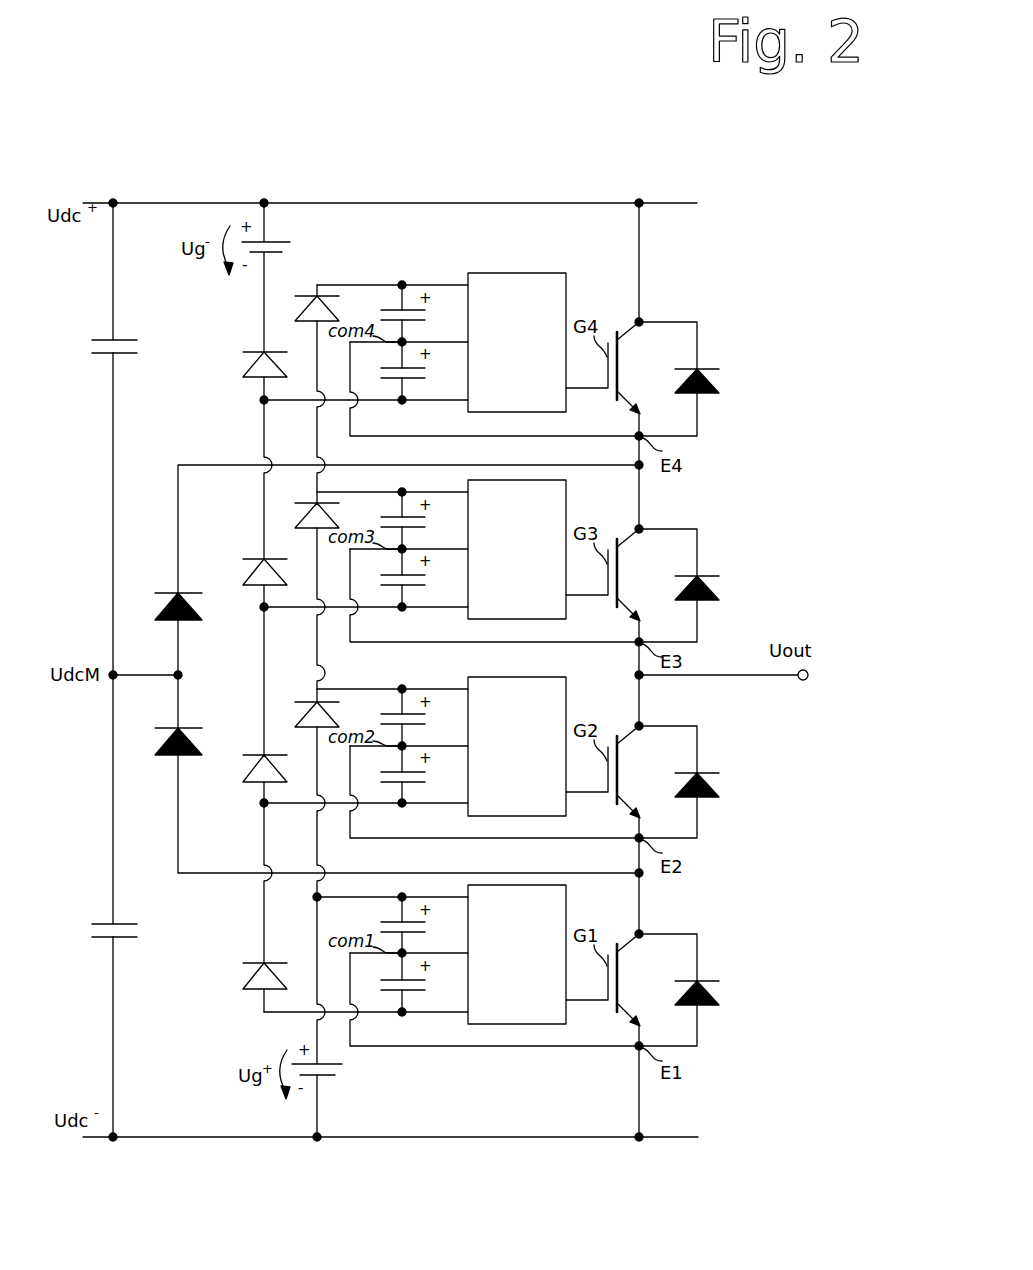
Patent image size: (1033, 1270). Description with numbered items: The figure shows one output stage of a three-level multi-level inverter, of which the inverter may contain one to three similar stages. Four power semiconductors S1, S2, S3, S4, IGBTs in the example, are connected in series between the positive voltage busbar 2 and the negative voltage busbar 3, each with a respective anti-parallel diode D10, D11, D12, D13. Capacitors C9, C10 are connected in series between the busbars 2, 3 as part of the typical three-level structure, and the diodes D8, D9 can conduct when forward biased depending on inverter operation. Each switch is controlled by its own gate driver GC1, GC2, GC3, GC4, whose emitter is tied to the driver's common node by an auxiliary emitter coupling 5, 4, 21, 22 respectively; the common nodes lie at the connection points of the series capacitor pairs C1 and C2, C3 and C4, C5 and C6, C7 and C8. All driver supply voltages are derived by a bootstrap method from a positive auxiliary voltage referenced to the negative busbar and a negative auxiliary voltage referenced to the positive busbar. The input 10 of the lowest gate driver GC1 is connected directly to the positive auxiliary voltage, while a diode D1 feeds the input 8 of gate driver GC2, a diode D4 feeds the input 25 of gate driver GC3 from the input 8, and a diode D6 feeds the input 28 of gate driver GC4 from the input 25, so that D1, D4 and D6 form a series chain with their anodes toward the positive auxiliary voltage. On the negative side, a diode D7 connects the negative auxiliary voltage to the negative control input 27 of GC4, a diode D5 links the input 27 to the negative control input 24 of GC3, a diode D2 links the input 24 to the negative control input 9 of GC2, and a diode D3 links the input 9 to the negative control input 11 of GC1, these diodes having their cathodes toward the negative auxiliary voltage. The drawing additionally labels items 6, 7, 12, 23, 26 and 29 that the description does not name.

The positive voltage busbar 2 is at (457, 206).
The negative voltage busbar 3 is at (461, 1136).
The auxiliary emitter coupling 4 is at (490, 839).
The auxiliary emitter coupling 5 is at (490, 1047).
The output terminal Uout 6 is at (801, 682).
The gate line of switch S1 7 is at (567, 1002).
The input of gate driver GC2 8 is at (402, 689).
The negative control input of gate driver GC2 9 is at (402, 803).
The input of gate driver GC1 10 is at (400, 898).
The negative control input of gate driver GC1 11 is at (402, 1012).
The gate line of switch S2 12 is at (567, 794).
The auxiliary emitter coupling 21 is at (490, 643).
The auxiliary emitter coupling 22 is at (490, 436).
The gate line of switch S3 23 is at (567, 597).
The negative control input of gate driver GC3 24 is at (402, 607).
The input of gate driver GC3 25 is at (402, 492).
The gate line of switch S4 26 is at (567, 390).
The negative control input of gate driver GC4 27 is at (402, 400).
The input of gate driver GC4 28 is at (402, 285).
The midpoint connection to UdcM 29 is at (178, 675).
The capacitor C1 is at (418, 926).
The capacitor C2 is at (418, 983).
The capacitor C3 is at (418, 720).
The capacitor C4 is at (418, 776).
The capacitor C5 is at (418, 522).
The capacitor C6 is at (418, 578).
The capacitor C7 is at (418, 315).
The capacitor C8 is at (418, 371).
The capacitor C9 is at (111, 332).
The capacitor C10 is at (106, 920).
The diode D1 is at (315, 700).
The diode D2 is at (258, 761).
The diode D3 is at (258, 963).
The diode D4 is at (311, 503).
The diode D5 is at (258, 559).
The diode D6 is at (311, 297).
The diode D7 is at (258, 353).
The diode D8 is at (176, 593).
The diode D9 is at (176, 730).
The anti-parallel diode D10 is at (702, 990).
The anti-parallel diode D11 is at (702, 782).
The anti-parallel diode D12 is at (702, 585).
The anti-parallel diode D13 is at (702, 379).
The power semiconductor S1 is at (638, 980).
The power semiconductor S2 is at (638, 772).
The power semiconductor S3 is at (638, 575).
The power semiconductor S4 is at (638, 368).
The gate driver GC1 is at (517, 954).
The gate driver GC2 is at (517, 746).
The gate driver GC3 is at (517, 549).
The gate driver GC4 is at (517, 342).